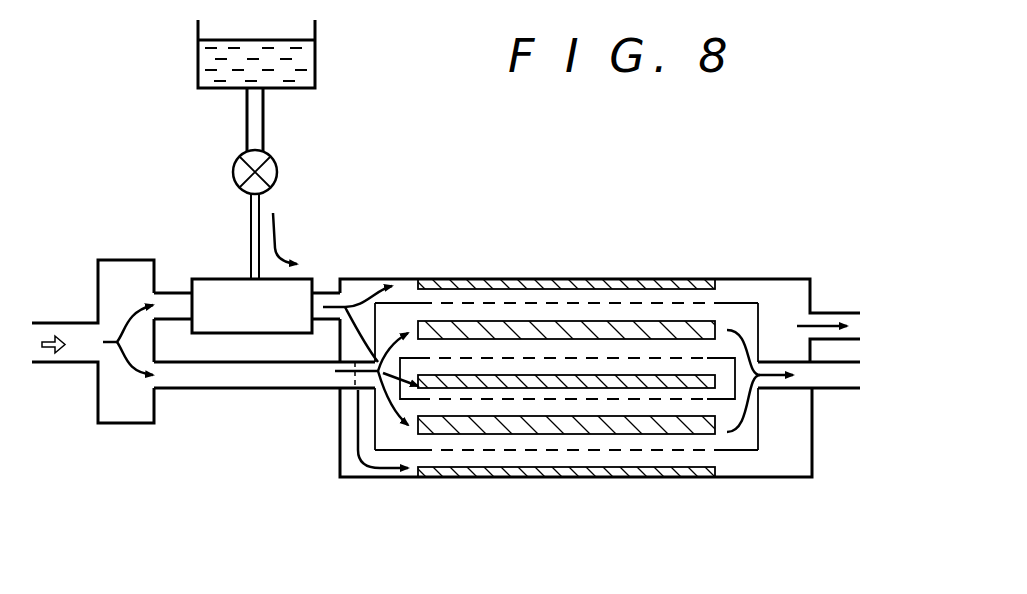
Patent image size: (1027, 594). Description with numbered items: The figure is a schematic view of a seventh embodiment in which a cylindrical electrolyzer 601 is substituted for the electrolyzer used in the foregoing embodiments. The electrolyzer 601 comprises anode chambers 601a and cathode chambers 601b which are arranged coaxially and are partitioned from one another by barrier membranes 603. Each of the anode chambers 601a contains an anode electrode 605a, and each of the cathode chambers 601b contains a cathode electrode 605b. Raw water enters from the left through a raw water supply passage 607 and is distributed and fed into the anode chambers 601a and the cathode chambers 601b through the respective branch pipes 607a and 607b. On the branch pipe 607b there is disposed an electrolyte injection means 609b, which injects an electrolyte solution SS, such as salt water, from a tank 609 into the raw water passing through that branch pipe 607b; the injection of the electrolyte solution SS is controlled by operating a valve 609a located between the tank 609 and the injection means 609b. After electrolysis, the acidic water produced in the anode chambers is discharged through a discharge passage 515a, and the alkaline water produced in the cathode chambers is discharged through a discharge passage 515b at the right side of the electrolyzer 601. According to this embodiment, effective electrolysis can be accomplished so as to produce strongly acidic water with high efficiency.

The cylindrical electrolyzer 601 is at (755, 280).
The anode chambers 601a is at (498, 310).
The cathode chambers 601b is at (583, 298).
The barrier membranes 603 is at (472, 304).
The anode electrode 605a is at (542, 310).
The cathode electrode 605b is at (627, 285).
The raw water supply passage 607 is at (62, 323).
The branch pipe 607a is at (233, 390).
The branch pipe 607b is at (170, 292).
The tank 609 is at (317, 68).
The valve 609a is at (277, 165).
The electrolyte injection means 609b is at (302, 280).
The discharge passage 515a is at (840, 392).
The discharge passage 515b is at (837, 313).
The electrolyte solution SS is at (197, 65).